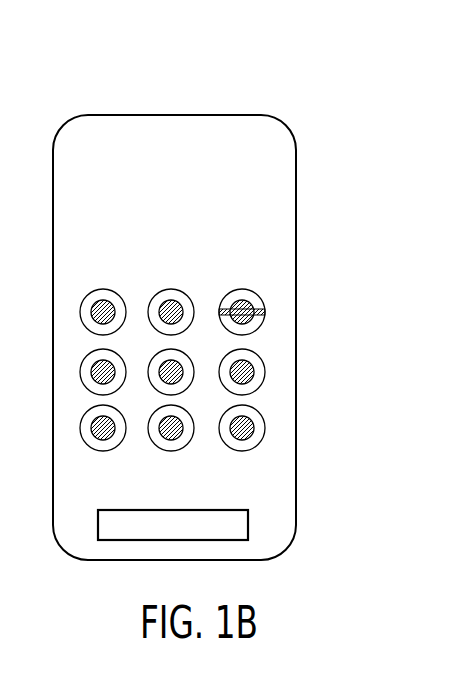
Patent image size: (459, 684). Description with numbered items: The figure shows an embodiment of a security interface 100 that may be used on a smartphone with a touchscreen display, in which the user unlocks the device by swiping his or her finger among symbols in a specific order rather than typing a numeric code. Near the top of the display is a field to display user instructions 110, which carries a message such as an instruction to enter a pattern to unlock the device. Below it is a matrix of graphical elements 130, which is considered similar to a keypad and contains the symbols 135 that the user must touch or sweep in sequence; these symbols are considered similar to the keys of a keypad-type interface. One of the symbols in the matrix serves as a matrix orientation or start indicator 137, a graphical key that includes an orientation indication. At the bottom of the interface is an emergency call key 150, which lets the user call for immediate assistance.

The security interface 100 is at (108, 78).
The field to display user instructions 110 is at (288, 197).
The matrix of graphical elements 130 is at (316, 295).
The symbols 135 is at (78, 306).
The matrix orientation or start indicator 137 is at (266, 300).
The emergency call key 150 is at (80, 528).